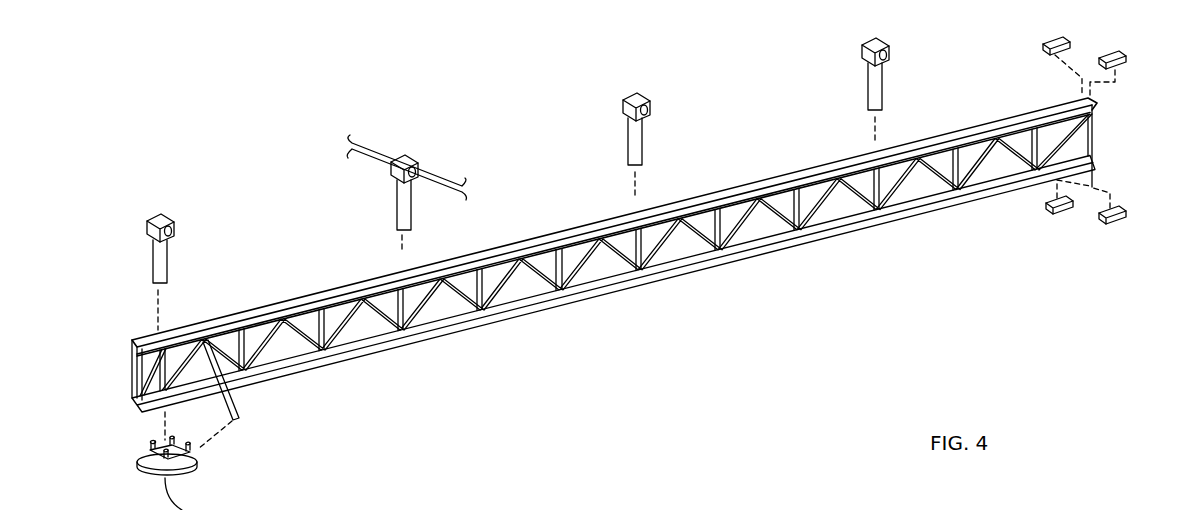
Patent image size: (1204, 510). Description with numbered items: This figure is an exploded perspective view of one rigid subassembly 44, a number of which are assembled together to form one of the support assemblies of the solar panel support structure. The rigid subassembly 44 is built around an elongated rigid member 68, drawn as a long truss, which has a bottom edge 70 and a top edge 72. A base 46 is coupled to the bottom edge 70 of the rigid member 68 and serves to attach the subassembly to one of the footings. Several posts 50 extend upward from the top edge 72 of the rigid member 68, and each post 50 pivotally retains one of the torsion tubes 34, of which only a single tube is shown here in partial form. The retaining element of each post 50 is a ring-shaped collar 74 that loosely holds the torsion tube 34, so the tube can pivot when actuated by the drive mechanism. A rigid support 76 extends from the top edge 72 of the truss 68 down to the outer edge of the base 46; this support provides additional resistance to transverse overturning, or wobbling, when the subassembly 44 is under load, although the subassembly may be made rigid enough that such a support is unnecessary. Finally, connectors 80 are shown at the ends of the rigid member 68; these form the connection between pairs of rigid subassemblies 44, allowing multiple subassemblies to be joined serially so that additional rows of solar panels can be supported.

The torsion tube 34 is at (370, 147).
The rigid subassembly 44 is at (880, 369).
The base 46 is at (146, 452).
The post 50 is at (152, 270).
The elongated rigid member 68 is at (134, 392).
The bottom edge 70 is at (700, 276).
The top edge 72 is at (718, 190).
The ring-shaped collar 74 is at (160, 212).
The rigid support 76 is at (240, 402).
The connector 80 is at (1043, 38).